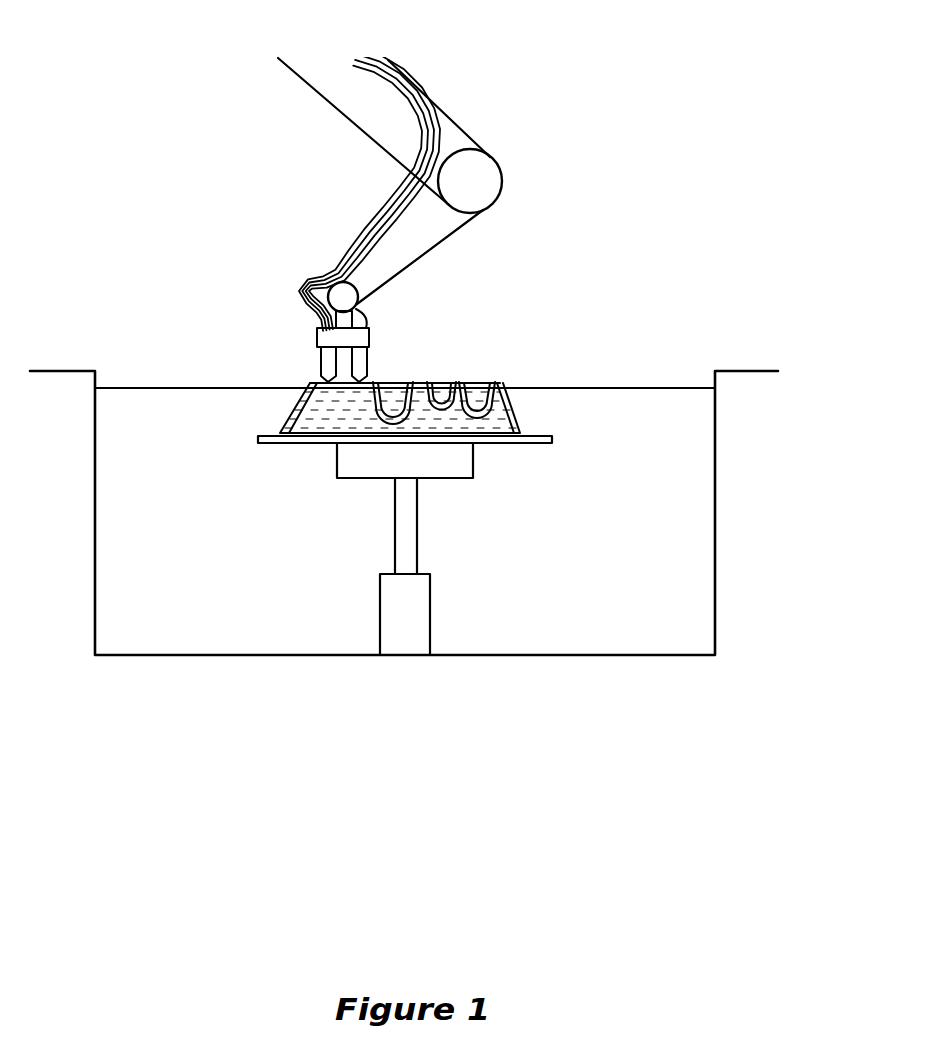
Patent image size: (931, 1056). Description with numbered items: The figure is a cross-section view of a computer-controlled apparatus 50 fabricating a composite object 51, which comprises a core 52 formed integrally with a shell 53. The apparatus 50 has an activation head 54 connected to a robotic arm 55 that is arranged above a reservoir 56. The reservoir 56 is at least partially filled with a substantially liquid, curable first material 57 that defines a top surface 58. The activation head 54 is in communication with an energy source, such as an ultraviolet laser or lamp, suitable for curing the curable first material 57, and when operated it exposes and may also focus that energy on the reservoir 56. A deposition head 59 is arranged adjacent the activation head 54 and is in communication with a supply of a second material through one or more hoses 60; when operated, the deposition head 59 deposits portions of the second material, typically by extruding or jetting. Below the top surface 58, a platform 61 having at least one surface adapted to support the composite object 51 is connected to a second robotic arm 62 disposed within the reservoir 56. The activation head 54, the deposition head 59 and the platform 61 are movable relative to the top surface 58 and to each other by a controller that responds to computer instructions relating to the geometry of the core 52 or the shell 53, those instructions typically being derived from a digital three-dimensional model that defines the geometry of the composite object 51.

The computer-controlled apparatus 50 is at (237, 171).
The composite object 51 is at (248, 405).
The core 52 is at (495, 383).
The shell 53 is at (513, 413).
The activation head 54 is at (319, 363).
The robotic arm 55 is at (363, 110).
The reservoir 56 is at (715, 512).
The curable first material 57 is at (592, 543).
The top surface 58 is at (608, 388).
The deposition head 59 is at (368, 363).
The hoses 60 is at (328, 283).
The platform 61 is at (527, 443).
The second robotic arm 62 is at (430, 613).